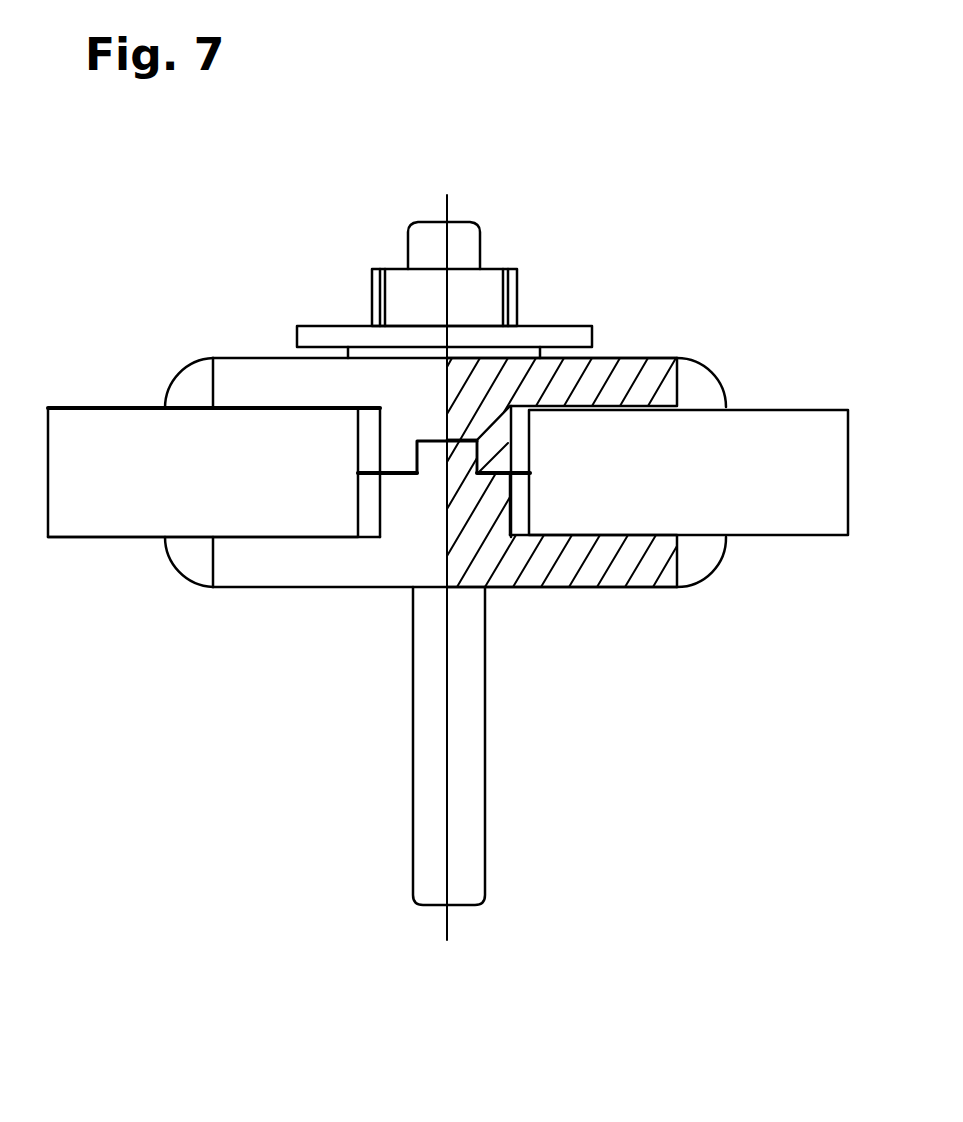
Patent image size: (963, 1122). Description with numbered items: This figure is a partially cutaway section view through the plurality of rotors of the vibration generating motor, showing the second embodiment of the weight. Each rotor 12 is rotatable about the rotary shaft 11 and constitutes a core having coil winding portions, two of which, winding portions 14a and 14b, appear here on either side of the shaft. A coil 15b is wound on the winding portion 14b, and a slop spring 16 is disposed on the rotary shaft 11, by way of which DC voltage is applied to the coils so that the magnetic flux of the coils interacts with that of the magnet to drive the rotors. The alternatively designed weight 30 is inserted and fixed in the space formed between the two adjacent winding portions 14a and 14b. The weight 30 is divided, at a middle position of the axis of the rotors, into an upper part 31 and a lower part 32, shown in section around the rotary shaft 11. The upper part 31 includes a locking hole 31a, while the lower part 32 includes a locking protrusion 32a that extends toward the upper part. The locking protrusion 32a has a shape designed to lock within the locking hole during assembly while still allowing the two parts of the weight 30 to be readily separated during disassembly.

The rotary shaft 11 is at (423, 768).
The rotor 12 is at (677, 278).
The winding portion 14a is at (800, 410).
The winding portion 14b is at (97, 420).
The coil 15b is at (188, 380).
The slop spring 16 is at (393, 278).
The weight 30 is at (630, 356).
The upper part 31 is at (668, 360).
The locking hole 31a is at (427, 440).
The lower part 32 is at (642, 580).
The locking protrusion 32a is at (466, 462).